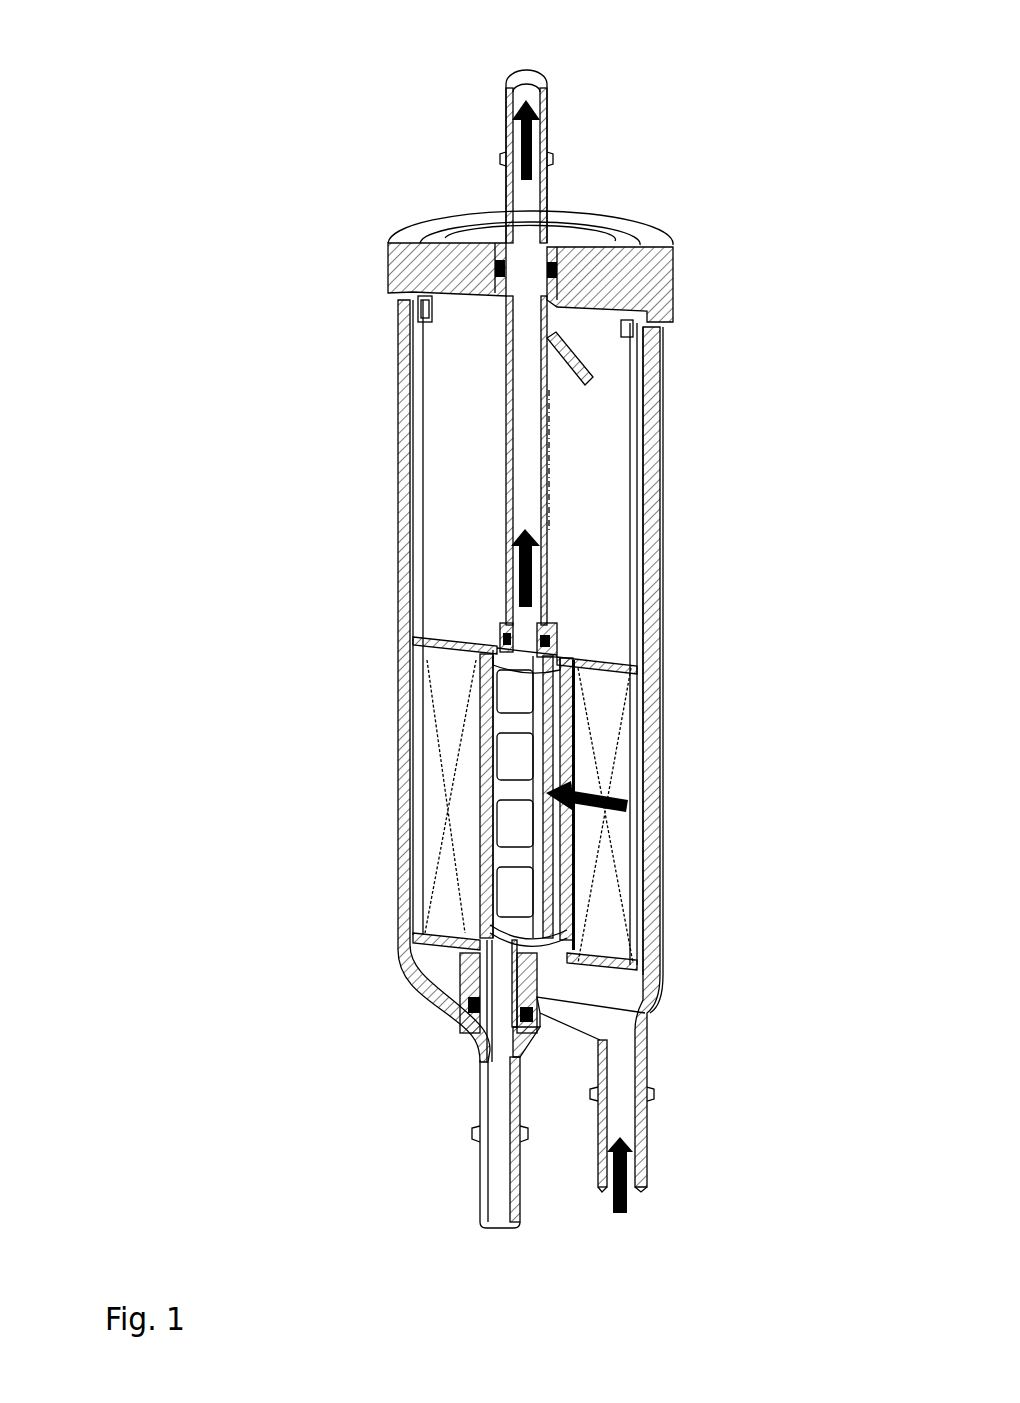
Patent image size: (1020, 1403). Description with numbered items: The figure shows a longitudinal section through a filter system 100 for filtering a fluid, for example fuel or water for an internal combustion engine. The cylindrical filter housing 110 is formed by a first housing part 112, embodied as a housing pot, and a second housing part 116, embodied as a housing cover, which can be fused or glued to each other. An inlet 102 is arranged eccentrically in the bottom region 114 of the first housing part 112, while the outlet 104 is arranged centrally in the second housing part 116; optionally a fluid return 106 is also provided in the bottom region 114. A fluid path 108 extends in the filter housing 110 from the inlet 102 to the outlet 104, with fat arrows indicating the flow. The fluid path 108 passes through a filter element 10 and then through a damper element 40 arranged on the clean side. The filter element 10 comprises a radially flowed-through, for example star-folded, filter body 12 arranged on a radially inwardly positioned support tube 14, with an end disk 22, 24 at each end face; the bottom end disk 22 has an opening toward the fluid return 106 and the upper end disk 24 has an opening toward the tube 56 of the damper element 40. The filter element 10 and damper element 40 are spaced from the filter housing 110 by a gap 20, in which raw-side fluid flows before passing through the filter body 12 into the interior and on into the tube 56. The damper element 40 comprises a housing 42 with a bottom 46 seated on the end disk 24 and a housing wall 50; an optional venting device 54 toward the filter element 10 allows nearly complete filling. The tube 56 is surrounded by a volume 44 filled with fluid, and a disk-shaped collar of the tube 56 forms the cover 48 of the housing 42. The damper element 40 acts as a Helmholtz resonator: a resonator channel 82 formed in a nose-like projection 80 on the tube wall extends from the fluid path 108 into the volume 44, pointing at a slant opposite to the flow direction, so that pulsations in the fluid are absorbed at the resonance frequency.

The filter system 100 is at (353, 210).
The outlet 104 is at (508, 183).
The second housing part 116 is at (670, 243).
The cover 48 is at (487, 310).
The fluid path 108 is at (512, 435).
The tube 56 is at (508, 463).
The resonator channel 82 is at (575, 390).
The projection 80 is at (571, 382).
The housing 42 is at (638, 450).
The damper element 40 is at (650, 483).
The volume 44 is at (591, 535).
The housing wall 50 is at (630, 557).
The first housing part 112 is at (662, 548).
The filter housing 110 is at (678, 709).
The venting device 54 is at (488, 639).
The bottom 46 is at (585, 660).
The filter body 12 is at (469, 722).
The end disk 24 is at (455, 648).
The gap 20 is at (415, 800).
The support tube 14 is at (480, 878).
The filter element 10 is at (643, 822).
The end disk 22 is at (440, 948).
The bottom region 114 is at (645, 1020).
The fluid return 106 is at (522, 1183).
The inlet 102 is at (647, 1165).